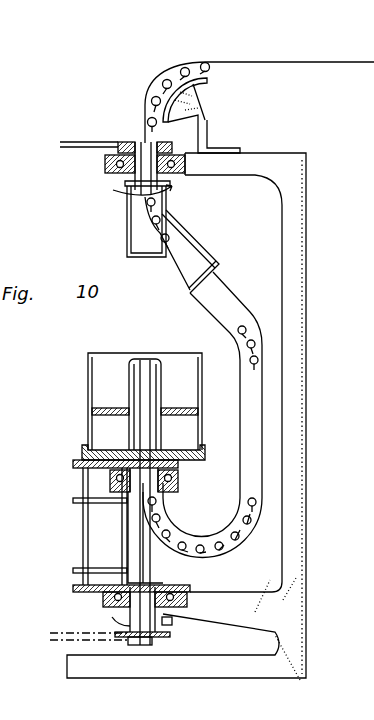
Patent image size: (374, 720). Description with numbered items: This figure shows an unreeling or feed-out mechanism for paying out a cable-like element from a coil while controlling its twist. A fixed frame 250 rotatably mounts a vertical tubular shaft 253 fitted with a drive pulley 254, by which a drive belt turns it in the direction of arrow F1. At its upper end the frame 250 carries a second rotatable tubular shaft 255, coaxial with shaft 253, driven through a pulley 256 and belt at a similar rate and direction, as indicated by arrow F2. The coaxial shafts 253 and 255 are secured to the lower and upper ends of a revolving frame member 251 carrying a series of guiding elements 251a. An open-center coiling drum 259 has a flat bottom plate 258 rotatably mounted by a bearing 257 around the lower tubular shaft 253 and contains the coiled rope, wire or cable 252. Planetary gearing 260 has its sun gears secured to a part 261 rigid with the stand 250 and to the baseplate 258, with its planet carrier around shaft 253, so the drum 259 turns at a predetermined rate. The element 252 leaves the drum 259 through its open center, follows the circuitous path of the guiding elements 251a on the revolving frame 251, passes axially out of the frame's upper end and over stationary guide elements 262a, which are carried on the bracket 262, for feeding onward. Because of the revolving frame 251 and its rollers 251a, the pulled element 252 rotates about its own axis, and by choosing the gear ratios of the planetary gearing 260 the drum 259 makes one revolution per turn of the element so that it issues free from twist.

The fixed frame 250 is at (297, 445).
The revolving frame member 251 is at (215, 269).
The guiding elements 251a is at (234, 337).
The coiled rope, wire or cable 252 is at (232, 309).
The vertical tubular shaft 253 is at (156, 581).
The drive pulley 254 is at (163, 637).
The second rotatable tubular shaft 255 is at (117, 197).
The pulley 256 is at (127, 142).
The bearing 257 is at (110, 479).
The flat bottom plate 258 is at (84, 452).
The open-center coiling drum 259 is at (199, 403).
The planetary gearing 260 is at (75, 531).
The part rigid with stand 261 is at (103, 597).
The guide bracket 262 is at (205, 104).
The stationary guide elements 262a is at (171, 70).
The arrow F1 is at (111, 621).
The arrow F2 is at (161, 191).